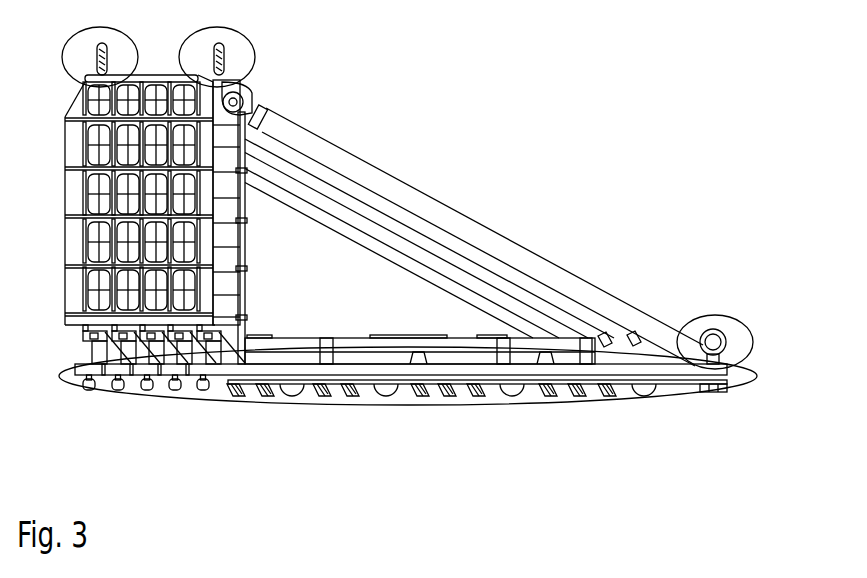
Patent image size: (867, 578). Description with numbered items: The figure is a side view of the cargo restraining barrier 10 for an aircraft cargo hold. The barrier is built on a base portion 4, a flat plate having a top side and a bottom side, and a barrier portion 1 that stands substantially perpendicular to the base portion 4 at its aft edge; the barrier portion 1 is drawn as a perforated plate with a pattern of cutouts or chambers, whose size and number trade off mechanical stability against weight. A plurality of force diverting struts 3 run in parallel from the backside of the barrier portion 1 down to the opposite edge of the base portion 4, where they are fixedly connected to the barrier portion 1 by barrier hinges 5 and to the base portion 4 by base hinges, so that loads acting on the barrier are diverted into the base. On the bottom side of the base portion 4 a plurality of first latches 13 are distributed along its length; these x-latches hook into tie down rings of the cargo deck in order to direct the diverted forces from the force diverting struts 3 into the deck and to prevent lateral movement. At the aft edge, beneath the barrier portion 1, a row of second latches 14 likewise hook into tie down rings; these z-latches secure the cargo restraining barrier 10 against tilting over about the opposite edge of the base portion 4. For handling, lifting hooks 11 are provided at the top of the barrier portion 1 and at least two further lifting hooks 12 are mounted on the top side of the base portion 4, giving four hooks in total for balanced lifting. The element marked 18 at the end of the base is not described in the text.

The barrier portion 1 is at (73, 190).
The force diverting struts 3 is at (452, 222).
The base portion 4 is at (347, 343).
The barrier hinges 5 is at (242, 98).
The cargo restraining barrier 10 is at (572, 90).
The lifting hooks 11 is at (97, 52).
The lifting hooks 12 is at (712, 329).
The first latches 13 is at (240, 396).
The second latches 14 is at (91, 391).
The base frame 18 is at (722, 393).